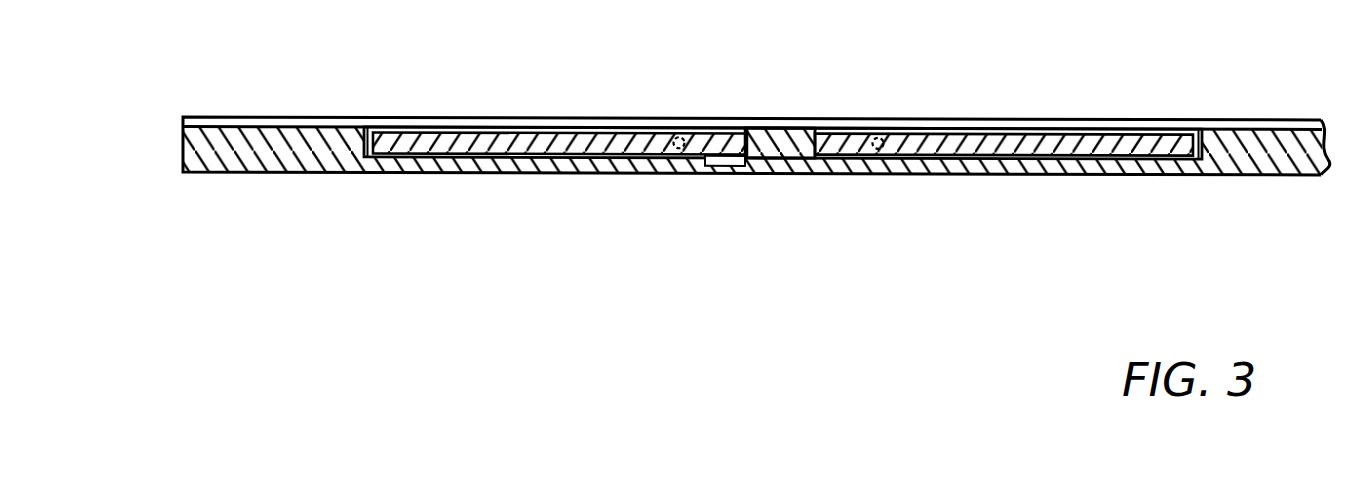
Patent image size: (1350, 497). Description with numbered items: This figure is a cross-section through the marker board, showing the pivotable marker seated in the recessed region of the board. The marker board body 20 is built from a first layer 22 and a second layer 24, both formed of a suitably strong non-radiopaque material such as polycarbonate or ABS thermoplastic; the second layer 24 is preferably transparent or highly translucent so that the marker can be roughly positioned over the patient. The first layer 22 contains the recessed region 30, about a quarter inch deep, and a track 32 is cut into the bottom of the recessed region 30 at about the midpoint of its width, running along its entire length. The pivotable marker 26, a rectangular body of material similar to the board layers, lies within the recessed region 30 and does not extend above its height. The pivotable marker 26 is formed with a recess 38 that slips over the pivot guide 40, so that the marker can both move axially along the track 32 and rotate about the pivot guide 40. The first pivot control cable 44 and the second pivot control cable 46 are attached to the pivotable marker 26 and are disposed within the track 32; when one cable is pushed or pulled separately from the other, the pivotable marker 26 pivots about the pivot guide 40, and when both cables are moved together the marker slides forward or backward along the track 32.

The marker board body 20 is at (183, 142).
The first layer 22 is at (1270, 175).
The second layer 24 is at (283, 117).
The pivotable marker 26 is at (1086, 138).
The recessed region 30 is at (364, 148).
The track 32 is at (718, 162).
The recess 38 is at (747, 125).
The pivot guide 40 is at (773, 150).
The first pivot control cable 44 is at (880, 130).
The second pivot control cable 46 is at (689, 130).